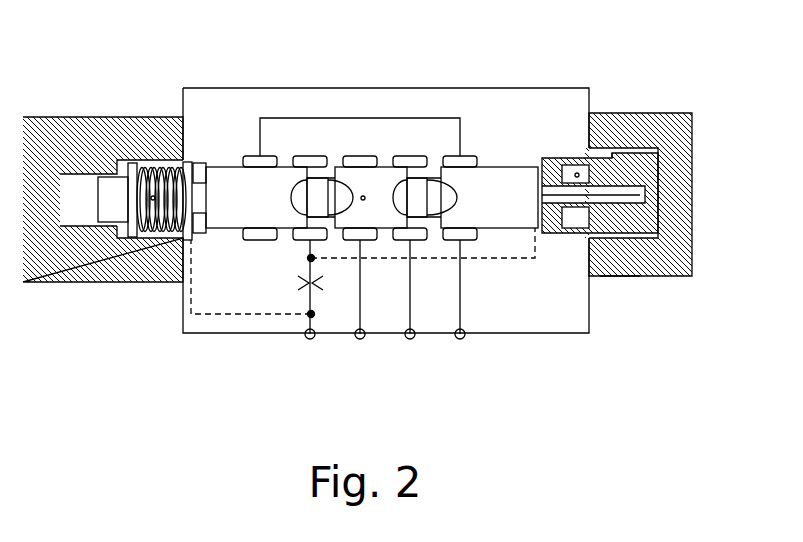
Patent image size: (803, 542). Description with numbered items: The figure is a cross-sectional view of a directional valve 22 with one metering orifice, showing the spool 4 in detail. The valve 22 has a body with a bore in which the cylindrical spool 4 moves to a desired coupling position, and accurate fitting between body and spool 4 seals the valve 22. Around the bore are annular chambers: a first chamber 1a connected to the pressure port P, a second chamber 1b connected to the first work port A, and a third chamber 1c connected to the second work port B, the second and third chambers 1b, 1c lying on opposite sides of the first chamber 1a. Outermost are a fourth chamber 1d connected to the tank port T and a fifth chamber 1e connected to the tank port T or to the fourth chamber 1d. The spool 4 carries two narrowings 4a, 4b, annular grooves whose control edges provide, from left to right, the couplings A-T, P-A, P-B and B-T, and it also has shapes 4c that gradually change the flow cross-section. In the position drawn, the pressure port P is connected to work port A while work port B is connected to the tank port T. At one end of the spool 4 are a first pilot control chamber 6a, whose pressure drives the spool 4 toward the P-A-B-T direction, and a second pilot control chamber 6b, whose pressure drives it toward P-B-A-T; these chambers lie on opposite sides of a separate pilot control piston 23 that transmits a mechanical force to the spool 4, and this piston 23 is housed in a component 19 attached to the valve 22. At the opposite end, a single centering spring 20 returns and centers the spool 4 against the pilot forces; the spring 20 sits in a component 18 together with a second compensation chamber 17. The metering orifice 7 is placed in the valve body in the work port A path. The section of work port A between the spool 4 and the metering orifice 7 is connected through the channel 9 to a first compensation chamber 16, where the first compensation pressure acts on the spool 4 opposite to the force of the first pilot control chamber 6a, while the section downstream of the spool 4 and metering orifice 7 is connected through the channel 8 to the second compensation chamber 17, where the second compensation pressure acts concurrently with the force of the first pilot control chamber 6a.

The first chamber 1a is at (347, 156).
The second chamber 1b is at (297, 156).
The third chamber 1c is at (421, 156).
The fourth chamber 1d is at (465, 156).
The fifth chamber 1e is at (245, 156).
The spool 4 is at (364, 196).
The narrowing 4a is at (322, 170).
The narrowing 4b is at (432, 185).
The shapes 4c is at (444, 215).
The first pilot control chamber 6a is at (577, 173).
The second pilot control chamber 6b is at (610, 153).
The metering orifice 7 is at (298, 282).
The channel 8 is at (222, 316).
The channel 9 is at (495, 257).
The first compensation chamber 16 is at (533, 166).
The second compensation chamber 17 is at (165, 160).
The component 18 is at (90, 283).
The component 19 is at (652, 277).
The spring 20 is at (152, 195).
The valve 22 is at (283, 335).
The pilot control piston 23 is at (613, 277).